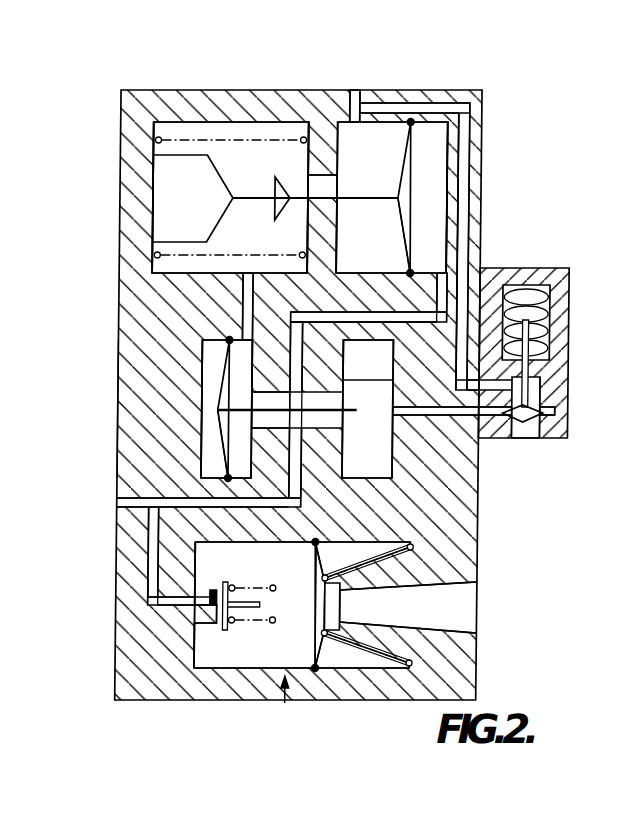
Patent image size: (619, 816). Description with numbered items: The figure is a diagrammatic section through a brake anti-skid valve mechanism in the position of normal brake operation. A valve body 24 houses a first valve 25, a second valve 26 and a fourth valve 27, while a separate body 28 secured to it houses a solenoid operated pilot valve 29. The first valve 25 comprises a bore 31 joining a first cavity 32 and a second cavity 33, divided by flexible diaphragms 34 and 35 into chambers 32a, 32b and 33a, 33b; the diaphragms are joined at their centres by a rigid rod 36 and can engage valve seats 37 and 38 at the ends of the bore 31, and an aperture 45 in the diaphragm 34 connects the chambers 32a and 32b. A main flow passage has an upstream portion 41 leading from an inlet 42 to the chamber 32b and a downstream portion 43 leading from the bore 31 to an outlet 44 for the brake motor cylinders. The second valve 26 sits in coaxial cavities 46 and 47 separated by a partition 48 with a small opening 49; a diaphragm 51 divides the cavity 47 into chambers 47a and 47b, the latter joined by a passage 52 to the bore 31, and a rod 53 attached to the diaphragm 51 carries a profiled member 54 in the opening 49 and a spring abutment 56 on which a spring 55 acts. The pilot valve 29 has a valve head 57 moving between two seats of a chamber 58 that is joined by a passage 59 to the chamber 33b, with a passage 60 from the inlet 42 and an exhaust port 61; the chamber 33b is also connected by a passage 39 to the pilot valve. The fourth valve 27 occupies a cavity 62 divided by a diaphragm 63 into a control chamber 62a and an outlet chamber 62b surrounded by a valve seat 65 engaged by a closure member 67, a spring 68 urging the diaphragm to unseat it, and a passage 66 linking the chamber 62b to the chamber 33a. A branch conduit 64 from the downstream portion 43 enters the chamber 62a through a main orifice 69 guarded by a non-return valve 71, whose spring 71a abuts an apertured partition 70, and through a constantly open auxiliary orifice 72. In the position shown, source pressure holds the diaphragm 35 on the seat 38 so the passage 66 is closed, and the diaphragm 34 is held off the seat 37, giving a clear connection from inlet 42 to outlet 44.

The valve body 24 is at (122, 121).
The first valve 25 is at (200, 422).
The second valve 26 is at (306, 115).
The fourth valve 27 is at (282, 705).
The separate body 28 is at (556, 325).
The pilot valve 29 is at (543, 432).
The bore 31 is at (307, 438).
The first cavity 32 is at (217, 340).
The chamber 32a is at (207, 350).
The chamber 32b is at (262, 348).
The second cavity 33 is at (398, 348).
The chamber 33a is at (354, 340).
The chamber 33b is at (386, 340).
The flexible diaphragm 34 is at (216, 449).
The flexible diaphragm 35 is at (350, 357).
The rigid rod 36 is at (278, 430).
The valve seat 37 is at (259, 382).
The valve seat 38 is at (353, 392).
The passage 39 is at (423, 416).
The upstream portion 41 is at (364, 186).
The inlet 42 is at (366, 104).
The downstream portion 43 is at (203, 502).
The outlet 44 is at (122, 502).
The aperture 45 is at (224, 372).
The first cylindrical cavity 46 is at (227, 124).
The second cylindrical cavity 47 is at (430, 130).
The chamber 47a is at (420, 232).
The chamber 47b is at (446, 190).
The partition 48 is at (355, 108).
The opening 49 is at (324, 188).
The flexible diaphragm 51 is at (408, 166).
The passage 52 is at (380, 310).
The rod 53 is at (240, 200).
The profiled member 54 is at (289, 184).
The spring 55 is at (281, 139).
The spring abutment 56 is at (160, 124).
The valve head 57 is at (548, 410).
The chamber 58 is at (561, 414).
The passage 59 is at (512, 438).
The passage 60 is at (481, 214).
The port 61 is at (530, 440).
The cavity 62 is at (384, 680).
The chamber 62a is at (243, 682).
The chamber 62b is at (328, 682).
The diaphragm 63 is at (321, 541).
The branch conduit 64 is at (160, 608).
The valve seat 65 is at (347, 600).
The passage 66 is at (344, 530).
The closure member 67 is at (326, 618).
The spring 68 is at (384, 566).
The main orifice 69 is at (213, 598).
The apertured partition 70 is at (264, 610).
The non-return valve 71 is at (237, 586).
The spring 71a is at (238, 630).
The auxiliary orifice 72 is at (200, 619).